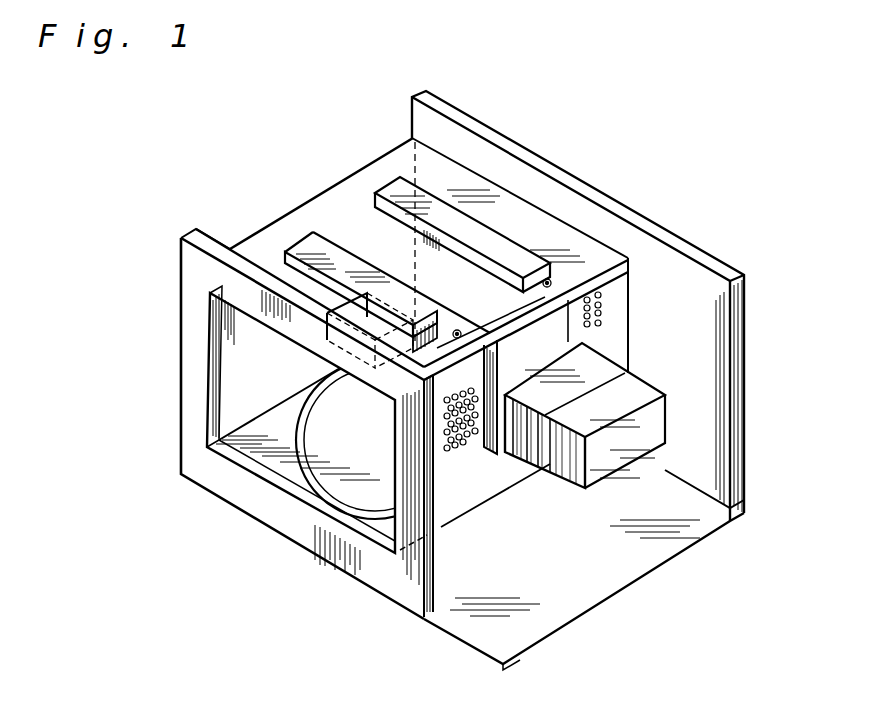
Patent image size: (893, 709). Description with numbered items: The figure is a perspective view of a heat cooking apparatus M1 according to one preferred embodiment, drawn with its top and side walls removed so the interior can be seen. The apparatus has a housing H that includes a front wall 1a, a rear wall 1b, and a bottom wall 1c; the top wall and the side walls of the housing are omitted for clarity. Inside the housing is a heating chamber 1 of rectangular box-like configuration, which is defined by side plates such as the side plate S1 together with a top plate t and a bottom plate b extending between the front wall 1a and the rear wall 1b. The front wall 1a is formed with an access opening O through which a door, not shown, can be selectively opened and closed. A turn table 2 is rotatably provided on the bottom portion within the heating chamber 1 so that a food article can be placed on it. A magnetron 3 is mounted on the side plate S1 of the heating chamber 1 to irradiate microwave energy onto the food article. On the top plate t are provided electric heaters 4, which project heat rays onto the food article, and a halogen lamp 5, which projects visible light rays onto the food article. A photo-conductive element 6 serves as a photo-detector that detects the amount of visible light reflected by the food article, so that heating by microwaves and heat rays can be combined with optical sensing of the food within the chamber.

The heat cooking apparatus M1 is at (631, 125).
The heating chamber 1 is at (349, 174).
The front wall 1a is at (264, 375).
The rear wall 1b is at (605, 284).
The bottom wall 1c is at (638, 552).
The turn table 2 is at (332, 472).
The magnetron 3 is at (620, 403).
The electric heaters 4 is at (313, 242).
The halogen lamp 5 is at (284, 254).
The photo-conductive element 6 is at (603, 302).
The access opening O is at (232, 386).
The bottom plate b is at (240, 455).
The top plate t is at (249, 241).
The housing H is at (613, 207).
The side plate S1 is at (467, 487).